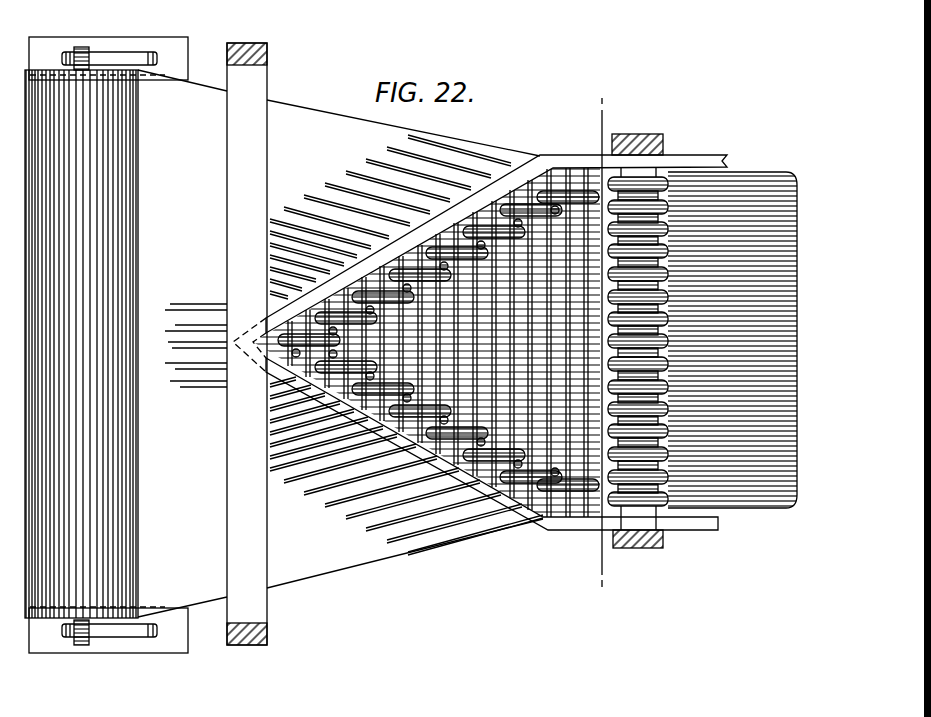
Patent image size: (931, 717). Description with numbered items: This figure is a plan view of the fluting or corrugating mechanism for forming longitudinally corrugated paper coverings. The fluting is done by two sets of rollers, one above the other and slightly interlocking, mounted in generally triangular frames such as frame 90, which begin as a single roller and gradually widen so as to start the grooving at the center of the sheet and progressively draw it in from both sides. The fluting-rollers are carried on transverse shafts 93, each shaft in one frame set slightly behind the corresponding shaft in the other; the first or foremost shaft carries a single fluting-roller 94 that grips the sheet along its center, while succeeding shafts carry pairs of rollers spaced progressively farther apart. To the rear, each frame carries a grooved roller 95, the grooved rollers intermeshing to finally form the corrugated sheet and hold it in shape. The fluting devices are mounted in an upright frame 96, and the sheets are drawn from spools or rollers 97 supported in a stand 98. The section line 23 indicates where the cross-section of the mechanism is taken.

The section line 23 is at (601, 343).
The frame 90 is at (519, 506).
The transverse shafts 93 is at (505, 214).
The fluting-roller 94 is at (450, 232).
The grooved roller 95 is at (722, 549).
The upright frame 96 is at (247, 344).
The spools or rollers 97 is at (95, 344).
The stand 98 is at (118, 635).